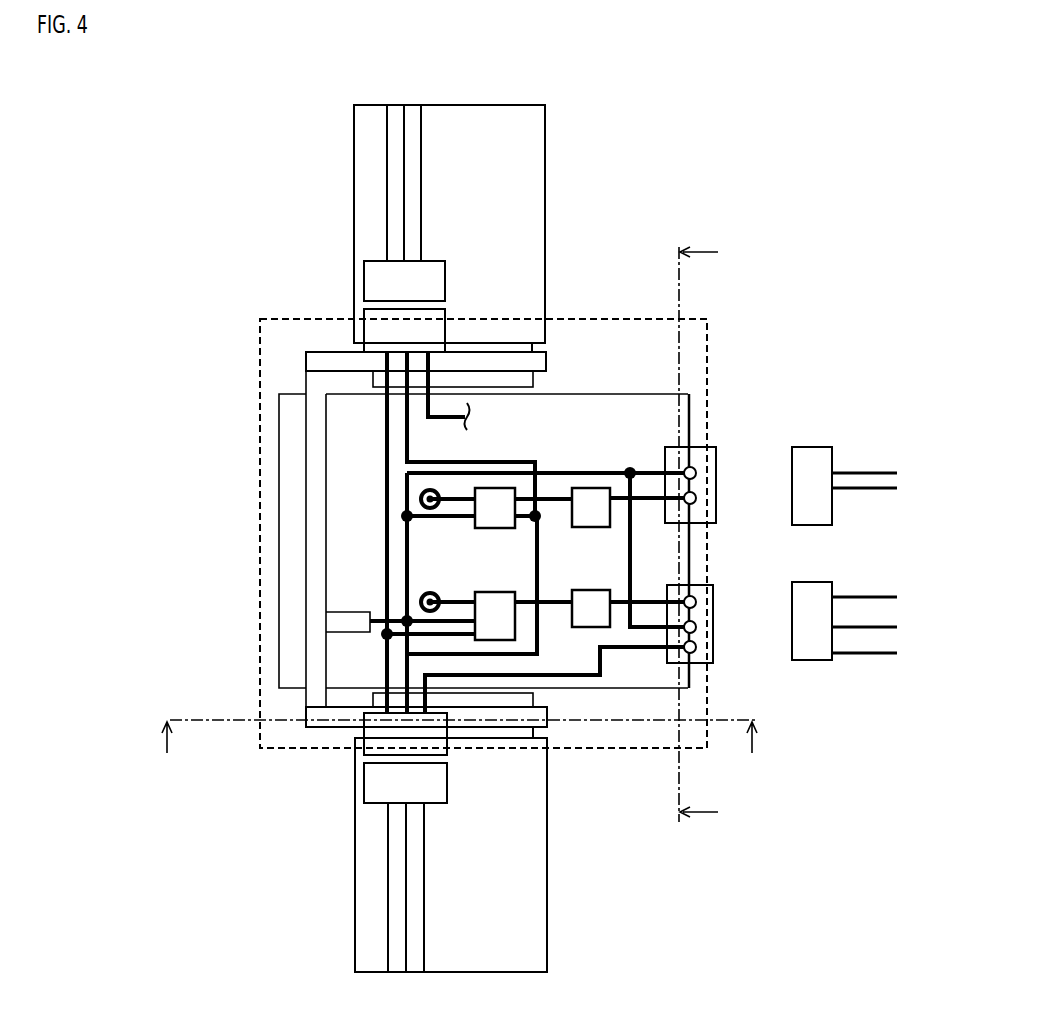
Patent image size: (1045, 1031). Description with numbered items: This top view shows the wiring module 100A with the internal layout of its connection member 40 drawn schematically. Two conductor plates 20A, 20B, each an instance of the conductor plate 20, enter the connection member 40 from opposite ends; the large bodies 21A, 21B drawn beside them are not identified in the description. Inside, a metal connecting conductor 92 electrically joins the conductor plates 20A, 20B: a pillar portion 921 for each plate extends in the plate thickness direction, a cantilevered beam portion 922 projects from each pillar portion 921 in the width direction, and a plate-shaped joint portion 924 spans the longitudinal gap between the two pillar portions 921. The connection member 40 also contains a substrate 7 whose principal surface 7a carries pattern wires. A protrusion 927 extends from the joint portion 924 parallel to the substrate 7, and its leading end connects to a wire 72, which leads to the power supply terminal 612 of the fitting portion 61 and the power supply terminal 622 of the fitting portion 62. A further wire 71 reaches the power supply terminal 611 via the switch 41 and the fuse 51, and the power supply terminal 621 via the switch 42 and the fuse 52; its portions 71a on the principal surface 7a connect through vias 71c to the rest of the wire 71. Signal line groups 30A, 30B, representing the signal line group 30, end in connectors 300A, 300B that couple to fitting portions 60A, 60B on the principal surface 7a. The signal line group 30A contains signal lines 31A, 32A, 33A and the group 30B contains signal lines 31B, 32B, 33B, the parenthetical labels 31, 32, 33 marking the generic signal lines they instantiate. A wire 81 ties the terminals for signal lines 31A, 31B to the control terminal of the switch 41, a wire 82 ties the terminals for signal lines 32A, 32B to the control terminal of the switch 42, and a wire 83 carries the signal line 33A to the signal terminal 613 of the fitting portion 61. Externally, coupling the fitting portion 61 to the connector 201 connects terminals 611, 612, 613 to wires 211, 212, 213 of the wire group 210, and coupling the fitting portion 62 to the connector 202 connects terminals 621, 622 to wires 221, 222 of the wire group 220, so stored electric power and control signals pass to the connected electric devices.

The wiring module 100A is at (614, 172).
The connection member 40 is at (688, 322).
The second housing 21B is at (537, 242).
The first housing 21A is at (543, 812).
The conductor plate 20B is at (503, 347).
The conductor plate 20A is at (495, 733).
The conductor plate 20 is at (545, 535).
The signal line group 30B is at (243, 128).
The signal line group 30A is at (245, 838).
The signal line group 30 is at (281, 538).
The signal line 31B is at (387, 143).
The signal line 32B is at (404, 178).
The signal line 33B is at (421, 210).
The signal line 31A is at (388, 853).
The signal line 32A is at (406, 887).
The signal line 33A is at (424, 920).
The wire 31 is at (387, 538).
The wire 32 is at (405, 538).
The signal line 33 is at (422, 538).
The connector 300B is at (375, 288).
The connector 300A is at (380, 780).
The fitting portion 60B is at (375, 332).
The fitting portion 60A is at (377, 730).
The pillar portion 921 is at (315, 363).
The beam portion 922 is at (343, 360).
The connecting conductor 92 is at (445, 523).
The joint portion 924 is at (317, 578).
The protrusion 927 is at (347, 620).
The substrate 7 is at (662, 417).
The principal surface 7a is at (612, 420).
The wire 81 is at (385, 467).
The wire 72 is at (403, 499).
The wire 71 is at (645, 488).
The wires 71a is at (546, 492).
The vias 71c is at (432, 486).
The switch 42 is at (497, 488).
The switch 41 is at (497, 596).
The fuse 52 is at (593, 495).
The fuse 51 is at (593, 603).
The wire 82 is at (537, 643).
The wire 83 is at (602, 665).
The fitting portion 62 is at (722, 458).
The power supply terminal 622 is at (697, 473).
The power supply terminal 621 is at (697, 498).
The fitting portion 61 is at (724, 608).
The power supply terminal 611 is at (697, 602).
The power supply terminal 612 is at (697, 627).
The signal terminal 613 is at (697, 647).
The wire group 220 is at (889, 382).
The connector 202 is at (809, 452).
The wire 222 is at (865, 470).
The wire 221 is at (866, 492).
The wire group 210 is at (896, 585).
The connector 201 is at (815, 590).
The wire 211 is at (858, 594).
The wire 212 is at (883, 625).
The wire 213 is at (870, 655).